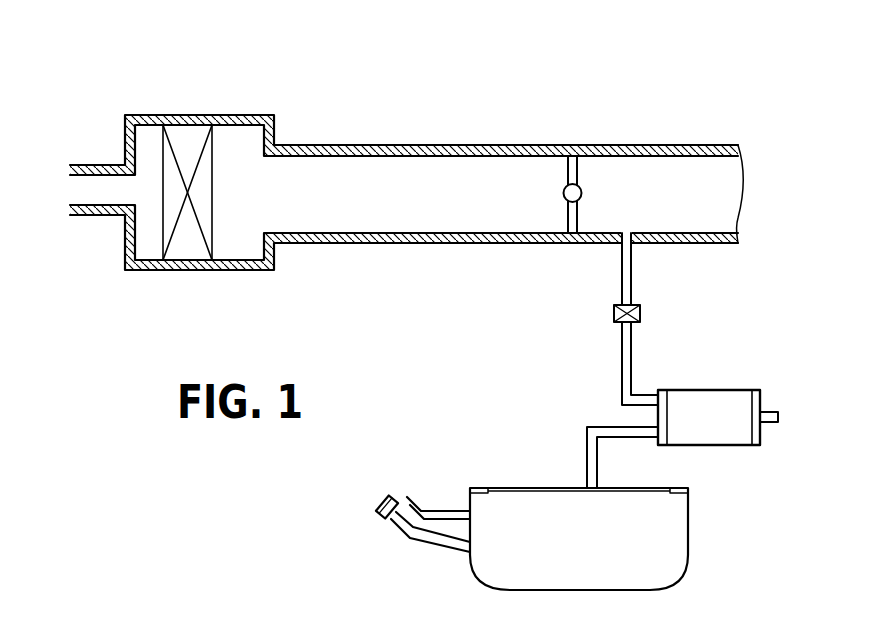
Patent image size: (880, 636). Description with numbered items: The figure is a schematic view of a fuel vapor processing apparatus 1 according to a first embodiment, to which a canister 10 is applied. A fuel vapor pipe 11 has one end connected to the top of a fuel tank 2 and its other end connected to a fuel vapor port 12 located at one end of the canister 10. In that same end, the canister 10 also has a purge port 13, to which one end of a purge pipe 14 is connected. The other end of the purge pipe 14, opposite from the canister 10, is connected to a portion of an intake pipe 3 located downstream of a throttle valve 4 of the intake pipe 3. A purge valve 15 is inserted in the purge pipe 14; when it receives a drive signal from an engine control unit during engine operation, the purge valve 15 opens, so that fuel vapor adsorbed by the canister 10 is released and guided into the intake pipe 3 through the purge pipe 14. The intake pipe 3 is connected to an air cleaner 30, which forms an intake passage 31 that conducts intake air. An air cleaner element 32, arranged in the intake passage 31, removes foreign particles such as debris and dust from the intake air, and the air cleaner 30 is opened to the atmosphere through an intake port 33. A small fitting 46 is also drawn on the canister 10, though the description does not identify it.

The fuel vapor processing apparatus 1 is at (475, 120).
The fuel tank 2 is at (690, 540).
The intake pipe 3 is at (372, 145).
The throttle valve 4 is at (579, 190).
The canister 10 is at (716, 386).
The fuel vapor pipe 11 is at (585, 449).
The fuel vapor port 12 is at (657, 444).
The purge port 13 is at (650, 395).
The purge pipe 14 is at (633, 270).
The purge valve 15 is at (641, 312).
The air cleaner 30 is at (190, 92).
The intake passage 31 is at (238, 133).
The air cleaner element 32 is at (184, 243).
The intake port 33 is at (90, 188).
The purge port 46 is at (773, 411).